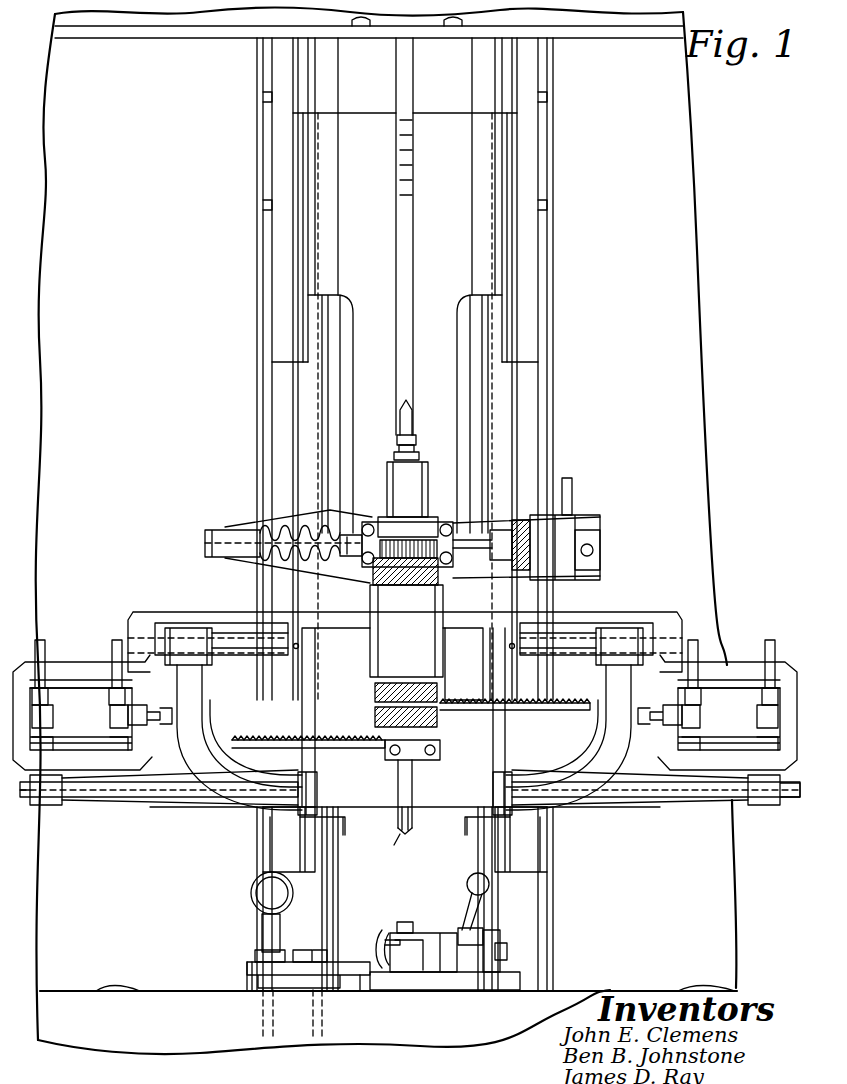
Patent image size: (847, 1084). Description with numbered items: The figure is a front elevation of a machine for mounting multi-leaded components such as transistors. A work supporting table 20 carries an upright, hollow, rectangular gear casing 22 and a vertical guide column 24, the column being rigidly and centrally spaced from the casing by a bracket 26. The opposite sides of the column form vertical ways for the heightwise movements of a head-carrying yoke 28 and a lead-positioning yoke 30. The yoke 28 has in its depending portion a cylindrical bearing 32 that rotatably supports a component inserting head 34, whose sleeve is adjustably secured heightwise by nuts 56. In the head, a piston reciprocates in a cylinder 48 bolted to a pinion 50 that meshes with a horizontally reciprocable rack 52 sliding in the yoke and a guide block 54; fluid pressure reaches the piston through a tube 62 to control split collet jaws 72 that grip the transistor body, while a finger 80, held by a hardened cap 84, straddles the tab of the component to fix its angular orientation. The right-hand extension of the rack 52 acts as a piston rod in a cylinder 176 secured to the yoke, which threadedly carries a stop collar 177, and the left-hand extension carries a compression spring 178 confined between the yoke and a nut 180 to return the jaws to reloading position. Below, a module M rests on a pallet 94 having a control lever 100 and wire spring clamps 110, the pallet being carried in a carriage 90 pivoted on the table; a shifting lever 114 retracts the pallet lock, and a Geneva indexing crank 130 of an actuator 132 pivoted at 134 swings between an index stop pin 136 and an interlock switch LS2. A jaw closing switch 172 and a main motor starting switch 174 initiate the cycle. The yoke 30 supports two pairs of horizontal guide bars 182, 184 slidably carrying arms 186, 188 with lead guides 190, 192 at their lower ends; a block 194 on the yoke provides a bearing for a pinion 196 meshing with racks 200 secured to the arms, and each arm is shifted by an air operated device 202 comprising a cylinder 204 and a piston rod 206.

The work supporting table 20 is at (186, 990).
The gear casing 22 is at (710, 218).
The vertical guide column 24 is at (505, 410).
The bracket 26 is at (190, 42).
The head-carrying yoke 28 is at (405, 236).
The lead-positioning yoke 30 is at (467, 664).
The cylindrical bearing 32 is at (403, 696).
The component inserting head 34 is at (239, 600).
The cylinder 48 is at (426, 462).
The pinion 50 is at (440, 548).
The rack 52 is at (458, 540).
The guide block 54 is at (442, 518).
The nuts 56 is at (373, 572).
The tube 62 is at (403, 425).
The split collet jaws 72 is at (414, 822).
The finger 80 is at (398, 836).
The cap 84 is at (390, 794).
The carriage 90 is at (453, 990).
The pallet 94 is at (378, 911).
The control lever 100 is at (382, 944).
The wire spring clamps 110 is at (405, 922).
The shifting lever 114 is at (480, 910).
The Geneva indexing crank 130 is at (251, 893).
The actuator 132 is at (333, 990).
The pivot 134 is at (300, 948).
The index stop pin 136 is at (243, 968).
The jaw closing switch 172 is at (106, 986).
The main motor starting switch 174 is at (697, 988).
The cylinder 176 is at (550, 535).
The stop collar 177 is at (510, 520).
The compression spring 178 is at (285, 532).
The nut 180 is at (345, 535).
The guide bars 182 is at (585, 612).
The guide bars 184 is at (93, 800).
The arm 186 is at (214, 703).
The arm 188 is at (605, 728).
The lead guide 190 is at (320, 780).
The lead guide 192 is at (495, 780).
The block 194 is at (420, 760).
The pinion 196 is at (375, 715).
The racks 200 is at (455, 710).
The air operated device 202 is at (82, 648).
The cylinder 204 is at (405, 719).
The piston rod 206 is at (158, 708).
The module M is at (432, 935).
The interlock switch LS2 is at (262, 1030).